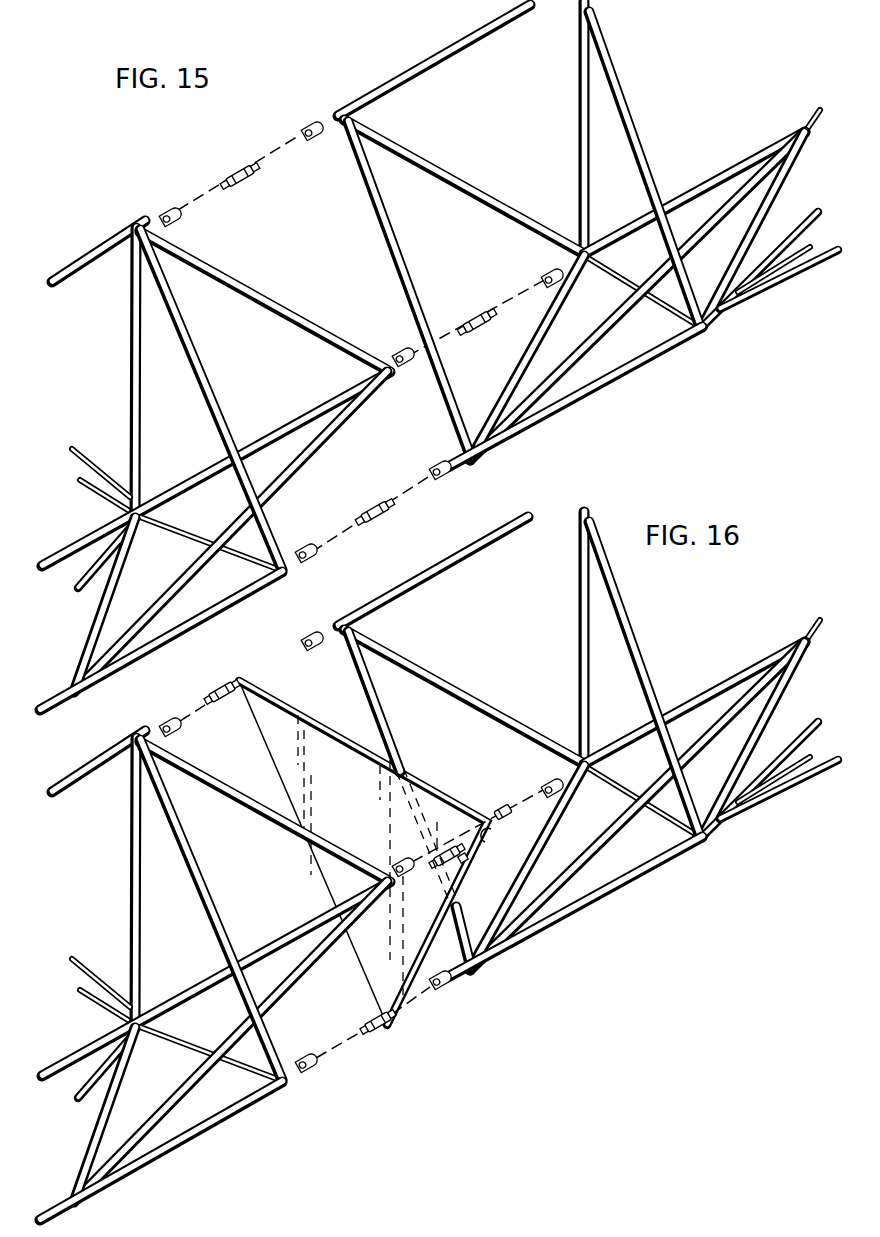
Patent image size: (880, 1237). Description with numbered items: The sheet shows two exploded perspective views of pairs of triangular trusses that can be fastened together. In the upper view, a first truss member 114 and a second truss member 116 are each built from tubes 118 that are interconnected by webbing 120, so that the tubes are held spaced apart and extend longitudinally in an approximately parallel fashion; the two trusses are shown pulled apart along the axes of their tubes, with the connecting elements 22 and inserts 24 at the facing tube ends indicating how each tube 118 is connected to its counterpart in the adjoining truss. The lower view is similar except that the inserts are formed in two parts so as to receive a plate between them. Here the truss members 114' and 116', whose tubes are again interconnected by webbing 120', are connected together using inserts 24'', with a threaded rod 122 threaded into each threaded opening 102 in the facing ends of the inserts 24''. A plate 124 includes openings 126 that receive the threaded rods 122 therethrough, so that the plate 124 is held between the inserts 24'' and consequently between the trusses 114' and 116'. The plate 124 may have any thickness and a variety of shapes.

In FIG. 15, the first truss member 114 is at (215, 430).
In FIG. 15, the second truss member 116 is at (559, 289).
In FIG. 15, the tube 118 is at (470, 30).
In FIG. 15, the webbing 120 is at (534, 127).
In FIG. 15, the clevis connector 22 is at (190, 218).
In FIG. 16, the clevis connector 22 is at (170, 714).
In FIG. 15, the turnbuckle coupling 24 is at (363, 343).
In FIG. 16, the truss member 116' is at (588, 746).
In FIG. 16, the truss member 114' is at (215, 971).
In FIG. 16, the vertical strut (modified) 120' is at (548, 637).
In FIG. 16, the plate 124 is at (362, 816).
In FIG. 16, the threaded opening 102 is at (500, 806).
In FIG. 16, the opening 126 is at (489, 837).
In FIG. 16, the threaded rod 122 is at (467, 858).
In FIG. 16, the insert 24'' is at (361, 868).